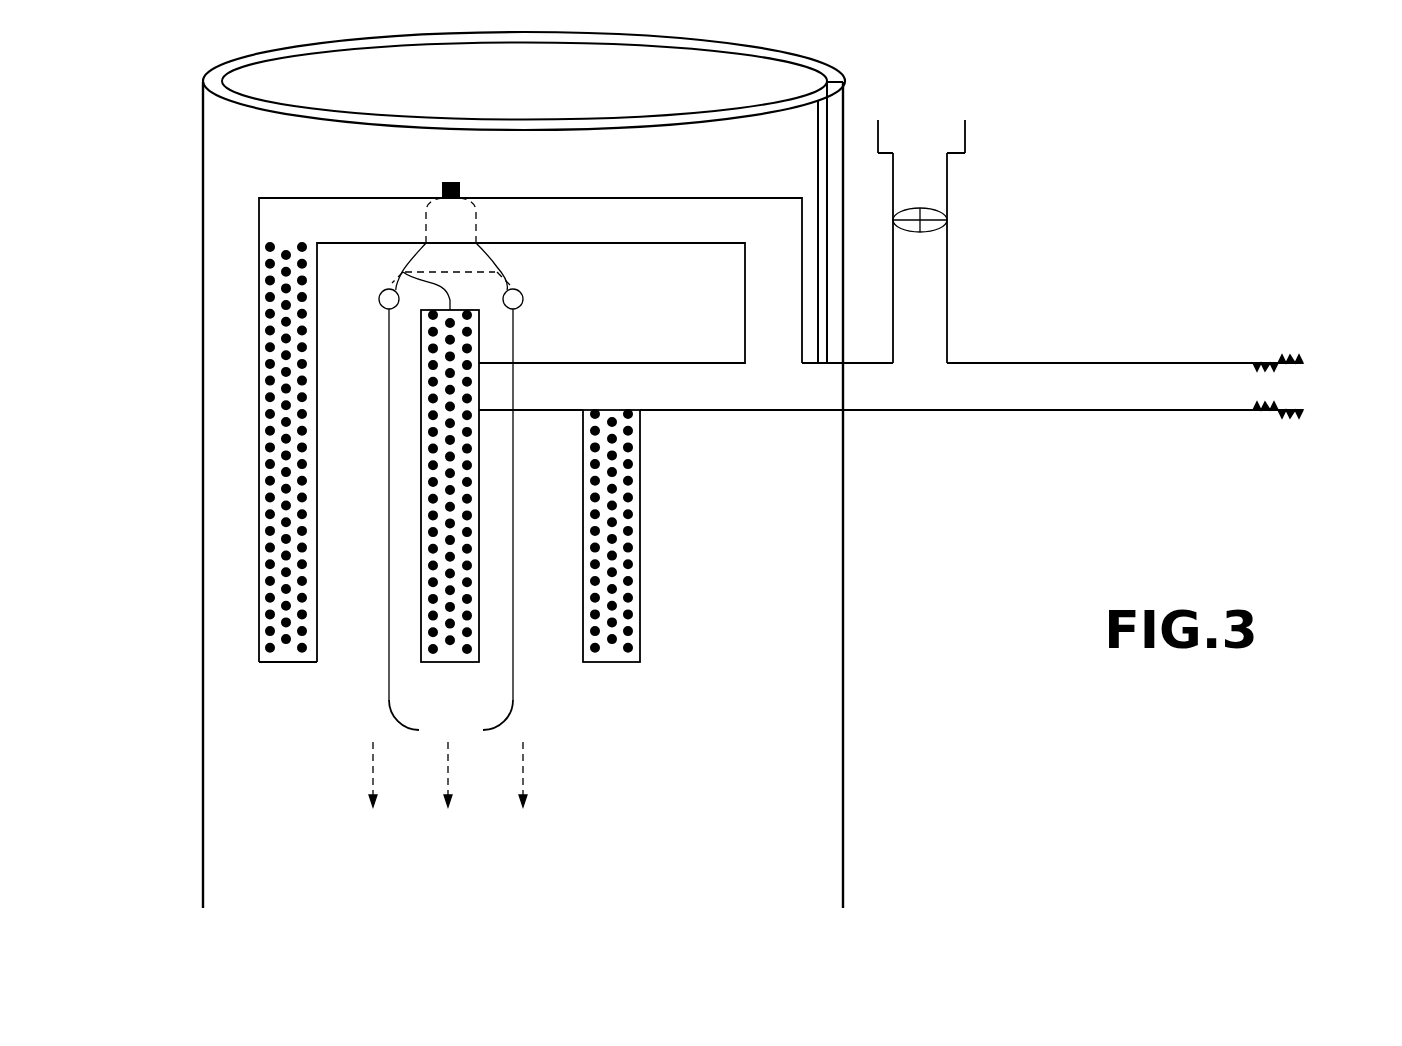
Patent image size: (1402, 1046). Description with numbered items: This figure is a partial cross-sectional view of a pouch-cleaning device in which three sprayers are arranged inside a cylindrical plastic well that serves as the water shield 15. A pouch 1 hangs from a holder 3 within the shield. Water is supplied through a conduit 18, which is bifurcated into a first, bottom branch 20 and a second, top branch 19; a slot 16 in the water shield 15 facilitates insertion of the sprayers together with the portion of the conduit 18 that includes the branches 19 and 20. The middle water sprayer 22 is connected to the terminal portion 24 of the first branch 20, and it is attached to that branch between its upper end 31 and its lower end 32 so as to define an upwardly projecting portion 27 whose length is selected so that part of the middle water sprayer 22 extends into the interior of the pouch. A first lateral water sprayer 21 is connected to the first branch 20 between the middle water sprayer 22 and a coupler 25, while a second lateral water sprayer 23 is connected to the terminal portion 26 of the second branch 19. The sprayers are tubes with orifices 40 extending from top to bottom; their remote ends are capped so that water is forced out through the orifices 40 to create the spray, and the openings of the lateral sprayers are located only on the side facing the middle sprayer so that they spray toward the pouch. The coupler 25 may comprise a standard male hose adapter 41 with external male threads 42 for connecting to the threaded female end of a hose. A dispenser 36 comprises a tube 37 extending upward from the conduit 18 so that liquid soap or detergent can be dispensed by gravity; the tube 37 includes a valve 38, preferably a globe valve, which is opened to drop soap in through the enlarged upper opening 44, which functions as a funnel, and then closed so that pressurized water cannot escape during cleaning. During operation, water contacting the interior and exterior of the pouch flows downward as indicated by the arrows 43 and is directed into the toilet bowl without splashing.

The pouch 1 is at (513, 333).
The holder 3 is at (503, 265).
The water shield 15 is at (843, 653).
The slot 16 is at (837, 115).
The conduit 18 is at (1087, 363).
The second branch 19 is at (671, 196).
The first branch 20 is at (697, 410).
The first lateral water sprayer 21 is at (641, 526).
The middle water sprayer 22 is at (435, 655).
The second lateral water sprayer 23 is at (268, 662).
The terminal portion 24 is at (483, 397).
The coupler 25 is at (1287, 345).
The terminal portion 26 is at (313, 213).
The upwardly projecting portion 27 is at (420, 337).
The upper end 31 is at (403, 270).
The lower end 32 is at (463, 663).
The dispenser 36 is at (947, 312).
The tube 37 is at (927, 268).
The valve 38 is at (938, 213).
The orifices 40 is at (304, 524).
The male hose adapter 41 is at (1280, 368).
The external male threads 42 is at (1302, 358).
The arrows 43 is at (372, 775).
The enlarged upper opening 44 is at (935, 130).